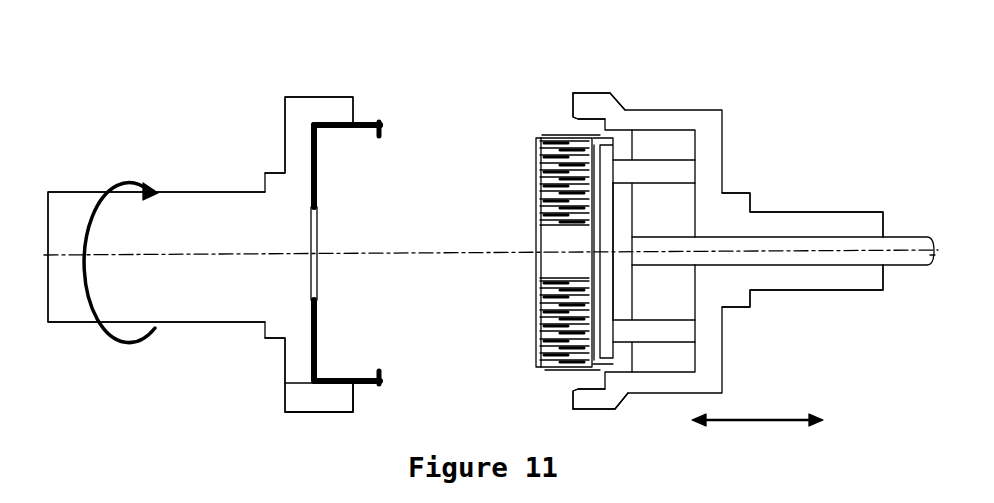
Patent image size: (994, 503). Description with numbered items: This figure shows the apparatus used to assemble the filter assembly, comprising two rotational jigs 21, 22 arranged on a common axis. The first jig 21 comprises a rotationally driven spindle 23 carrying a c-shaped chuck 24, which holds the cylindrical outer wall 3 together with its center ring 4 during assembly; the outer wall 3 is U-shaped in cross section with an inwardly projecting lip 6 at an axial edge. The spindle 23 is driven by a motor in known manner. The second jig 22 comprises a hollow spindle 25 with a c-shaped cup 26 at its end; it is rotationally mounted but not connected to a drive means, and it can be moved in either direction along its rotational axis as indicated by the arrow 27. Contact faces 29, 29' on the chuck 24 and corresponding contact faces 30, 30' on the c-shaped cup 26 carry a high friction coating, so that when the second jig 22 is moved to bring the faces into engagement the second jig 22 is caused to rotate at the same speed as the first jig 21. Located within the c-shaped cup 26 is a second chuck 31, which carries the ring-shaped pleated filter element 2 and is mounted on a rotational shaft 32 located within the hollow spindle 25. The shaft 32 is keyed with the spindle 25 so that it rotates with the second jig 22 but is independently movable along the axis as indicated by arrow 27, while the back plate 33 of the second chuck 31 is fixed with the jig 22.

The first jig 21 is at (186, 111).
The second jig 22 is at (818, 117).
The spindle 23 is at (195, 307).
The c-shaped chuck 24 is at (297, 388).
The hollow spindle 25 is at (800, 283).
The c-shaped cup 26 is at (650, 118).
The arrow 27 is at (752, 422).
The contact face 29 is at (344, 118).
The contact face 29' is at (348, 386).
The contact face 30 is at (563, 96).
The contact face 30' is at (565, 412).
The second chuck 31 is at (620, 298).
The rotational shaft 32 is at (830, 245).
The back plate 33 is at (600, 215).
The pleated filter element 2 is at (550, 205).
The cylindrical outer wall 3 is at (338, 128).
The center ring 4 is at (318, 300).
The lip 6 is at (382, 128).